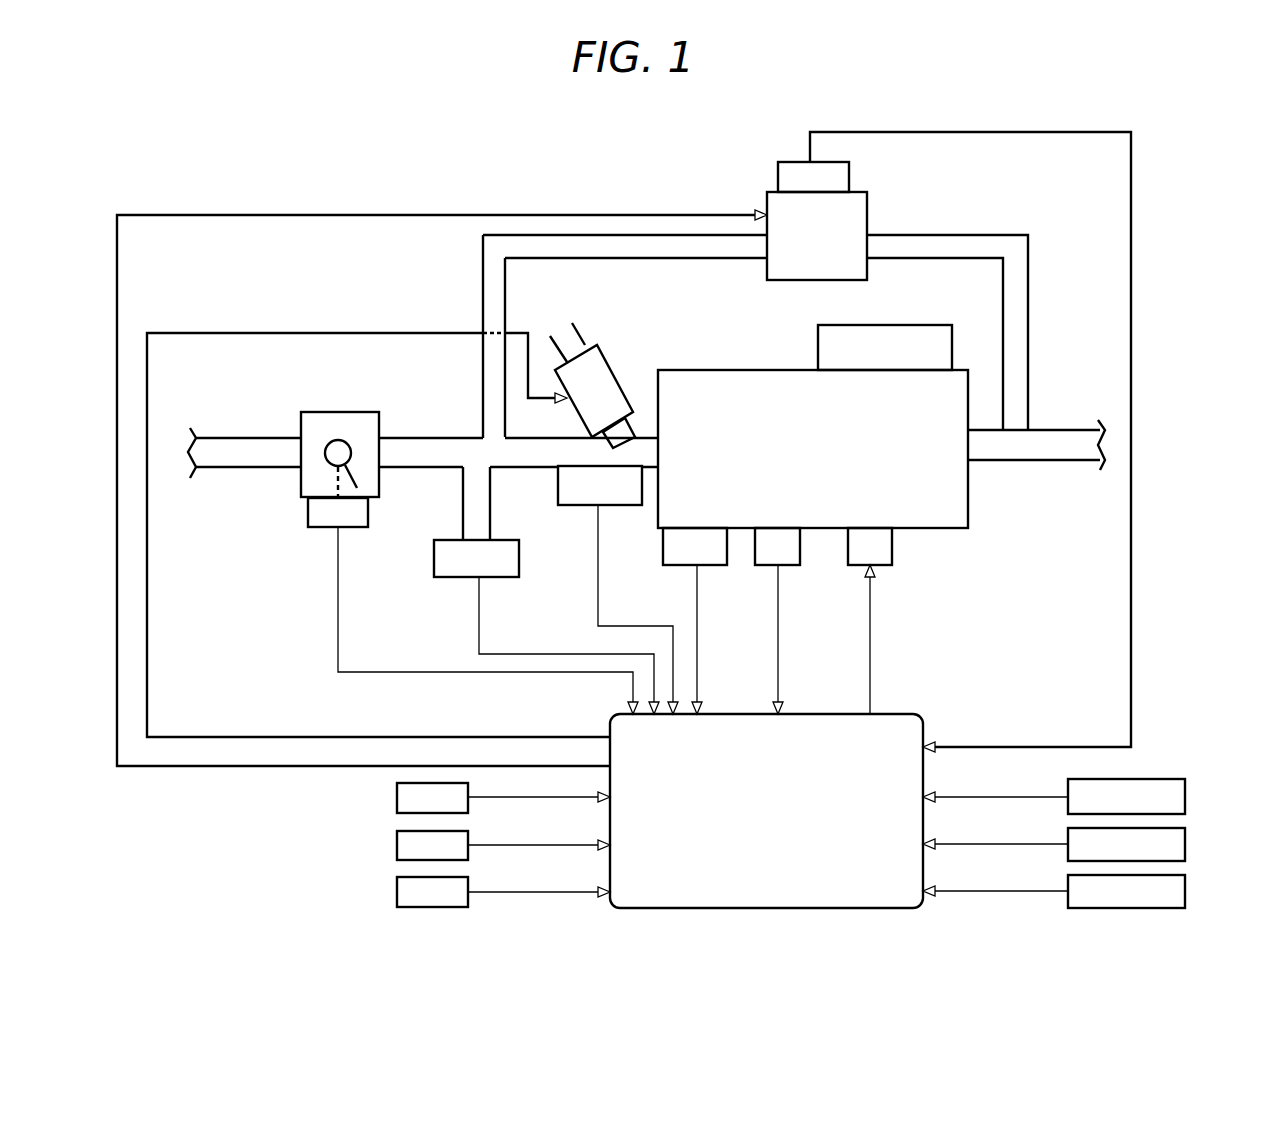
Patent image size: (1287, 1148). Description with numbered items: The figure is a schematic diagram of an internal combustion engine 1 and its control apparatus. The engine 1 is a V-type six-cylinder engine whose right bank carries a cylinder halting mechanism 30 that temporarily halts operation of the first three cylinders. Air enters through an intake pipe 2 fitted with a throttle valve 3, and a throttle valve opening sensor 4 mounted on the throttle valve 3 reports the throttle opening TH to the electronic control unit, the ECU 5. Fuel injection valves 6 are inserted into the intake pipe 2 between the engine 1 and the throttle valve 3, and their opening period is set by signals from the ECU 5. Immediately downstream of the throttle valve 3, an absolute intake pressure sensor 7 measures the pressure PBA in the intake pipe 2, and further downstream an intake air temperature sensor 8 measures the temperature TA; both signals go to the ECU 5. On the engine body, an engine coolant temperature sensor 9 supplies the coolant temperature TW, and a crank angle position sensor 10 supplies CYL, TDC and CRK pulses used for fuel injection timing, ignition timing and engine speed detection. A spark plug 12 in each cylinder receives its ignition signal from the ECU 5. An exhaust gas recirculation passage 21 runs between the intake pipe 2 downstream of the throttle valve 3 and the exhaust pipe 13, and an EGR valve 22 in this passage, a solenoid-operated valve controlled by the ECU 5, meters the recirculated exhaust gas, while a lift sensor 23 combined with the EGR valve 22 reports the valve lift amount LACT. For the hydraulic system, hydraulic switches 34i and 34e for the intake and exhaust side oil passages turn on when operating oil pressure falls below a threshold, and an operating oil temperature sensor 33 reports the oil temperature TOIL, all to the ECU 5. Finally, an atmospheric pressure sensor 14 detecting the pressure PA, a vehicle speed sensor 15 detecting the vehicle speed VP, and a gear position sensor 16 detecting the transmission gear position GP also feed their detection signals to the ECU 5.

The internal combustion engine 1 is at (733, 370).
The intake pipe 2 is at (413, 438).
The throttle valve 3 is at (327, 438).
The throttle valve opening sensor 4 is at (350, 528).
The electronic control unit 5 is at (851, 714).
The fuel injection valve 6 is at (613, 368).
The absolute intake pressure sensor 7 is at (495, 578).
The intake air temperature sensor 8 is at (620, 505).
The engine coolant temperature sensor 9 is at (712, 565).
The crank angle position sensor 10 is at (785, 565).
The spark plug 12 is at (878, 565).
The exhaust pipe 13 is at (1070, 430).
The atmospheric pressure sensor 14 is at (397, 790).
The vehicle speed sensor 15 is at (397, 837).
The gear position sensor 16 is at (397, 884).
The exhaust gas recirculation passage 21 is at (996, 235).
The EGR valve 22 is at (867, 208).
The lift sensor 23 is at (778, 180).
The cylinder halting mechanism 30 is at (890, 325).
The operating oil temperature sensor 33 is at (1185, 891).
The hydraulic switch 34i is at (1185, 797).
The hydraulic switch 34e is at (1185, 844).